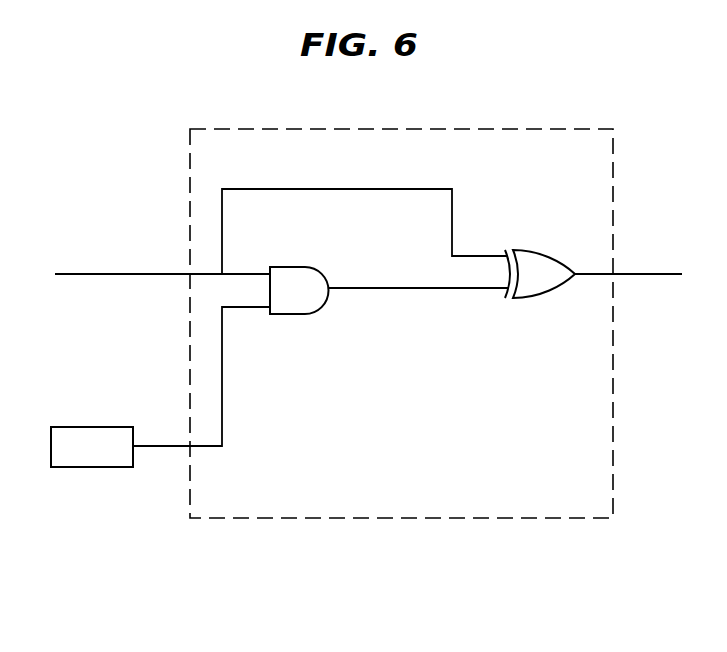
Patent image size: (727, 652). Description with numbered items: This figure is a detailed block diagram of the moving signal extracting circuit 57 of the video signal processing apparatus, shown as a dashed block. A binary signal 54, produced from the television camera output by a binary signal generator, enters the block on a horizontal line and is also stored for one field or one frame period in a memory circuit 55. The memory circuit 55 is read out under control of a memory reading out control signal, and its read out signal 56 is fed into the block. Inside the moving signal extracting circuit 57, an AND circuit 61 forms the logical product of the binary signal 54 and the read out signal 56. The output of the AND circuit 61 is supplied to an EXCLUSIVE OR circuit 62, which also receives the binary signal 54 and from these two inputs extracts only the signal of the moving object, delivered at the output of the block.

The binary signal 54 is at (114, 273).
The memory circuit 55 is at (93, 467).
The read out signal 56 is at (222, 393).
The moving signal extracting circuit 57 is at (410, 129).
The AND circuit 61 is at (323, 303).
The EXCLUSIVE OR circuit 62 is at (560, 254).